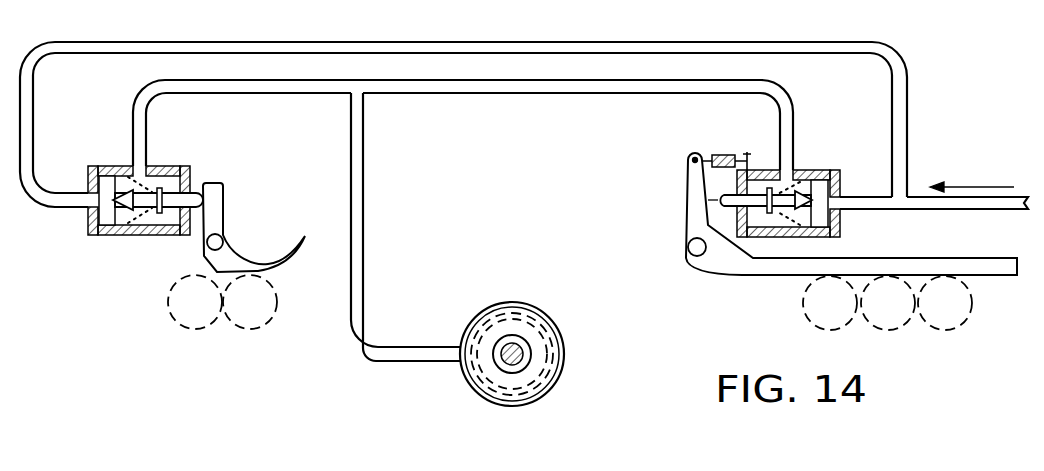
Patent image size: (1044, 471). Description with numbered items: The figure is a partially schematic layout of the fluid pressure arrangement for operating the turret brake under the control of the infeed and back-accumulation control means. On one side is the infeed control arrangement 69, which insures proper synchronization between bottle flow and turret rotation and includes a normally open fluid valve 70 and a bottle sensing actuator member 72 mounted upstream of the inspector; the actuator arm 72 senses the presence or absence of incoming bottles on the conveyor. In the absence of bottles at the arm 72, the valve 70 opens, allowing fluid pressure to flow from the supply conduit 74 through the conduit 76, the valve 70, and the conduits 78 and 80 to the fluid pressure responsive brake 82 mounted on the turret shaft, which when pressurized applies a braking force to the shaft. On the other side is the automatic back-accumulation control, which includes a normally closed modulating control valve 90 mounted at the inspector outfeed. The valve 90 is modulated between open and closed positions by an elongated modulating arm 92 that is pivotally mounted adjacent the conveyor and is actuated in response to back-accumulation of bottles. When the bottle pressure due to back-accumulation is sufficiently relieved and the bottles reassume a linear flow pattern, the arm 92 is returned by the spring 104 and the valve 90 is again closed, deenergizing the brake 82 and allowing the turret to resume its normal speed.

The conduit 76 is at (455, 43).
The conduit 78 is at (136, 117).
The conduit 80 is at (363, 232).
The fluid pressure responsive brake 82 is at (531, 305).
The infeed control arrangement 69 is at (90, 254).
The fluid valve 70 is at (167, 165).
The bottle sensing actuator member 72 is at (252, 258).
The modulating control valve 90 is at (812, 170).
The spring 104 is at (724, 155).
The modulating arm 92 is at (897, 268).
The supply conduit 74 is at (980, 209).